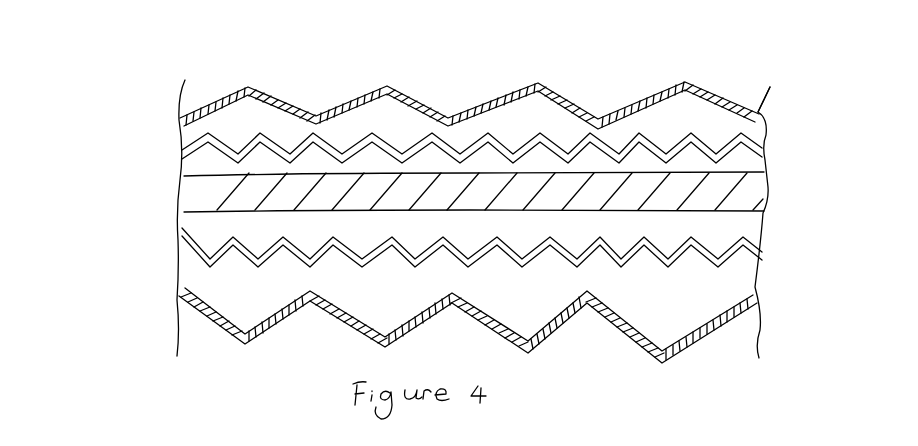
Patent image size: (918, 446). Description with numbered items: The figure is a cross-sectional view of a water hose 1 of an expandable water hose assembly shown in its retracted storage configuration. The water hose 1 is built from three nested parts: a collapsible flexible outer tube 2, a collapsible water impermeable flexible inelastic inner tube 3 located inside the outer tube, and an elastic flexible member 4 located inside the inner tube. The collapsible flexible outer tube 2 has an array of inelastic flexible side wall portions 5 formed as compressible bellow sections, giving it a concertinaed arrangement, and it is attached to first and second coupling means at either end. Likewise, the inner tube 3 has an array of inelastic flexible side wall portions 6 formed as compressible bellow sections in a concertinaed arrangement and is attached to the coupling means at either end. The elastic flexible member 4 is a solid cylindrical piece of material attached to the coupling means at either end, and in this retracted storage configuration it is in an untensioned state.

The water hose 1 is at (731, 70).
The collapsible flexible outer tube 2 is at (182, 310).
The collapsible water impermeable flexible inelastic inner tube 3 is at (772, 228).
The elastic flexible member 4 is at (183, 220).
The inelastic flexible side wall portions 5 is at (185, 79).
The inelastic flexible side wall portions 6 is at (343, 137).